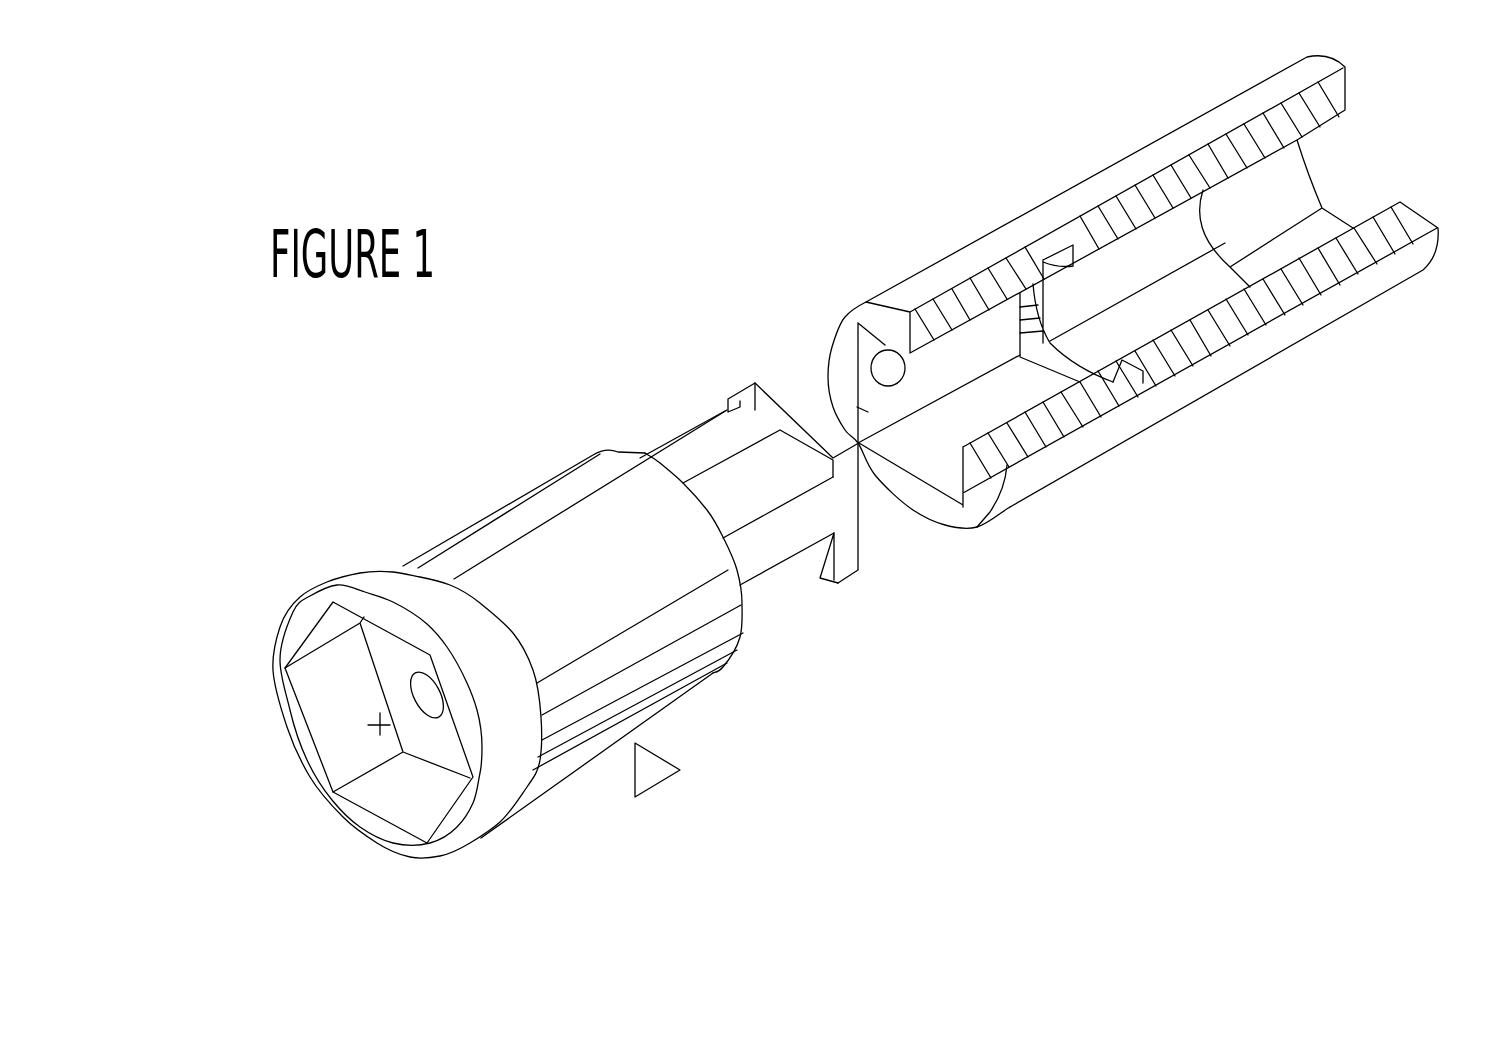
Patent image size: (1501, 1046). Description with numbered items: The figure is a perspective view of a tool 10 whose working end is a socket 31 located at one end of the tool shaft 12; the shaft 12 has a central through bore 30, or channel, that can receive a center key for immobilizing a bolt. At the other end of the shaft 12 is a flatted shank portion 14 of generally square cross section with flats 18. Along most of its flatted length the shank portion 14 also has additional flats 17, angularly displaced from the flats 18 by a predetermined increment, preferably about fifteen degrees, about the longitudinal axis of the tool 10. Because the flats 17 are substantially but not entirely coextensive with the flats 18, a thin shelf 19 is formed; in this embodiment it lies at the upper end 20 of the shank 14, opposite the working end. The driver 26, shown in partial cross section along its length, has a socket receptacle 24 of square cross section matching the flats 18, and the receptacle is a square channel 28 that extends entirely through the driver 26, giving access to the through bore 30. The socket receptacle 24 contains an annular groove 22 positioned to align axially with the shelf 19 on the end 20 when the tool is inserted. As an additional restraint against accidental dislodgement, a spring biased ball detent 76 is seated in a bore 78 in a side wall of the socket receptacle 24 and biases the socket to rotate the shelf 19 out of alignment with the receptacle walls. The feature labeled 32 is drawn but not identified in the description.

The tool 10 is at (657, 783).
The tool shaft 12 is at (527, 553).
The flatted shank portion 14 is at (683, 458).
The additional flats 17 is at (762, 593).
The flats 18 is at (737, 428).
The thin shelf 19 is at (756, 410).
The upper end 20 is at (862, 558).
The annular groove 22 is at (1062, 245).
The socket receptacle 24 is at (942, 475).
The driver 26 is at (1083, 468).
The square channel 28 is at (858, 443).
The central through bore 30 is at (432, 697).
The socket 31 is at (315, 660).
The locking tooth 32 is at (836, 585).
The spring biased ball detent 76 is at (893, 364).
The bore 78 is at (857, 328).